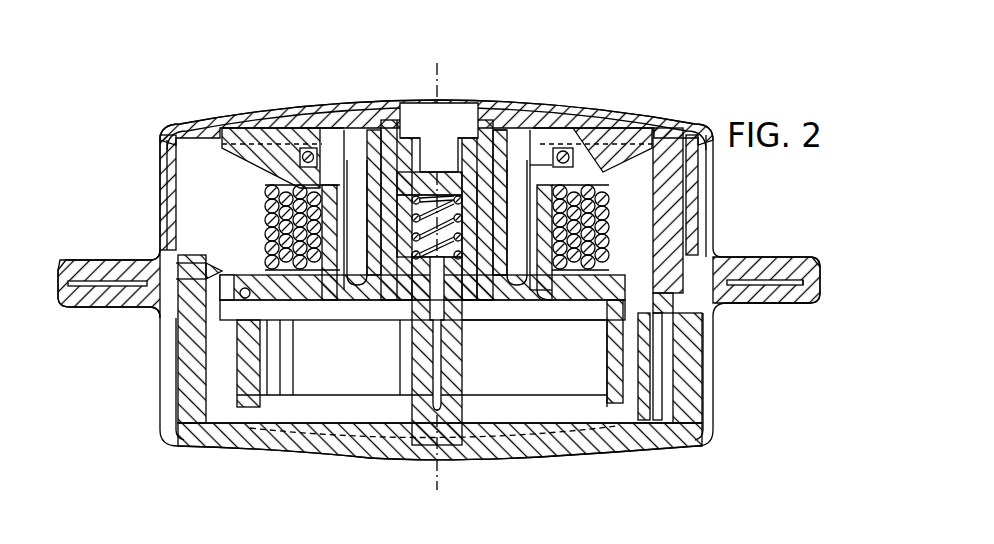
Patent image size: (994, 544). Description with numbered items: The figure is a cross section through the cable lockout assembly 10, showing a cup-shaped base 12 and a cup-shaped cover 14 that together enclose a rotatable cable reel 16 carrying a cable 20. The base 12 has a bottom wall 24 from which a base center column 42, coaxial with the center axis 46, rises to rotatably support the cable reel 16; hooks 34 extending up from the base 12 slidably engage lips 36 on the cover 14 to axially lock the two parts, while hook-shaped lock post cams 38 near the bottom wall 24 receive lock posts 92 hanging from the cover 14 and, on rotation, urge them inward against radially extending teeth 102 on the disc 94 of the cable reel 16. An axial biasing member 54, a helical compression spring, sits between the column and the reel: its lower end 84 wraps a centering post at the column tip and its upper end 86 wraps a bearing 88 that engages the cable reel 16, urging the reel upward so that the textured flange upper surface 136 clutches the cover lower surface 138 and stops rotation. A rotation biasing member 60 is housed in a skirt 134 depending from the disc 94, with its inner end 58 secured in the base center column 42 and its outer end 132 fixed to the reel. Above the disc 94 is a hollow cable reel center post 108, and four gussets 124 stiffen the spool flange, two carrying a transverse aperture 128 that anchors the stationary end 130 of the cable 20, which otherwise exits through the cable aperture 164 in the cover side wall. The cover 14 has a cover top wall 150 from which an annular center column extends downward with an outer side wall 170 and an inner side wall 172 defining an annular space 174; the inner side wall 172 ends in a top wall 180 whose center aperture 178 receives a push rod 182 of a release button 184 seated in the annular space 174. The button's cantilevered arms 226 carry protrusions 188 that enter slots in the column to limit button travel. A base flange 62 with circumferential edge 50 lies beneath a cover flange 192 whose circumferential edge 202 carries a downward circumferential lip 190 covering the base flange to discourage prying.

The cable lockout assembly 10 is at (717, 58).
The base 12 is at (677, 437).
The cover 14 is at (699, 128).
The cable reel 16 is at (686, 200).
The cable 20 is at (268, 188).
The bottom wall 24 is at (293, 443).
The hooks 34 is at (200, 272).
The lips 36 is at (186, 275).
The lock post cams 38 is at (644, 403).
The base center column 42 is at (455, 385).
The center axis 46 is at (437, 63).
The circumferential edge 50 is at (793, 303).
The axial biasing member 54 is at (449, 182).
The inner end 58 is at (432, 357).
The rotation biasing member 60 is at (553, 383).
The base flange 62 is at (770, 297).
The lower end 84 is at (473, 183).
The upper end 86 is at (441, 177).
The bearing 88 is at (397, 120).
The lock post 92 is at (670, 238).
The disc 94 is at (600, 272).
The teeth 102 is at (214, 284).
The cable reel center post 108 is at (374, 120).
The gussets 124 is at (243, 120).
The transverse aperture 128 is at (337, 120).
The stationary end 130 is at (281, 120).
The outer end 132 is at (242, 375).
The skirt 134 is at (615, 367).
The flange upper surface 136 is at (598, 124).
The cover lower surface 138 is at (631, 134).
The cover top wall 150 is at (311, 120).
The cable aperture 164 is at (160, 200).
The outer side wall 170 is at (545, 222).
The inner side wall 172 is at (478, 262).
The annular space 174 is at (505, 255).
The center aperture 178 is at (458, 120).
The top wall 180 is at (512, 160).
The push rod 182 is at (417, 120).
The release button 184 is at (466, 176).
The protrusions 188 is at (363, 235).
The circumferential lip 190 is at (813, 290).
The cover flange 192 is at (777, 272).
The circumferential edge 202 is at (815, 263).
The cantilevered arms 226 is at (530, 172).